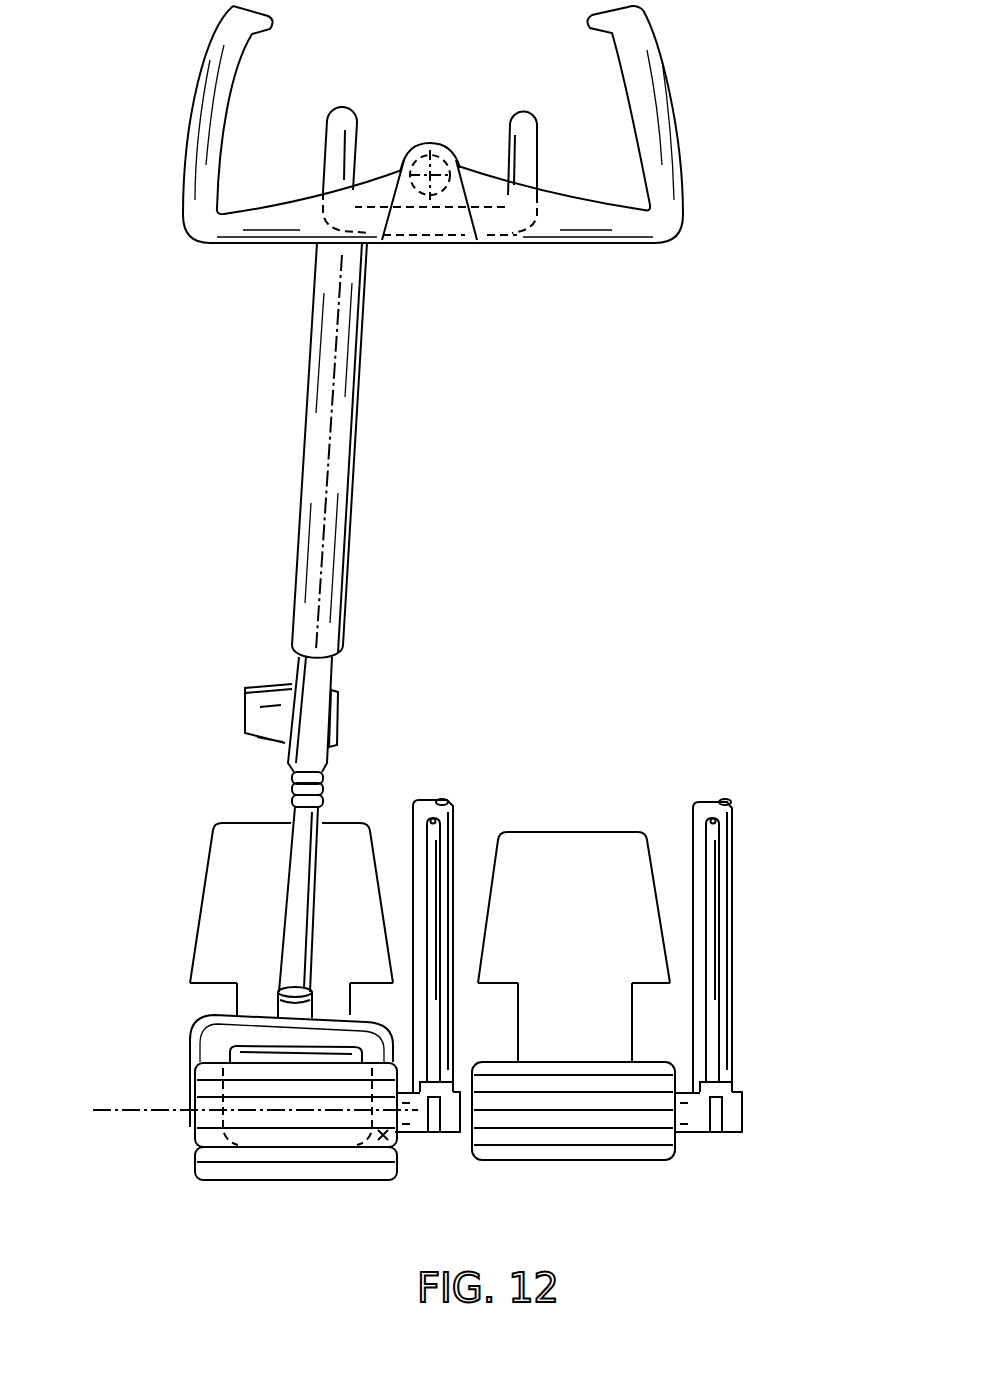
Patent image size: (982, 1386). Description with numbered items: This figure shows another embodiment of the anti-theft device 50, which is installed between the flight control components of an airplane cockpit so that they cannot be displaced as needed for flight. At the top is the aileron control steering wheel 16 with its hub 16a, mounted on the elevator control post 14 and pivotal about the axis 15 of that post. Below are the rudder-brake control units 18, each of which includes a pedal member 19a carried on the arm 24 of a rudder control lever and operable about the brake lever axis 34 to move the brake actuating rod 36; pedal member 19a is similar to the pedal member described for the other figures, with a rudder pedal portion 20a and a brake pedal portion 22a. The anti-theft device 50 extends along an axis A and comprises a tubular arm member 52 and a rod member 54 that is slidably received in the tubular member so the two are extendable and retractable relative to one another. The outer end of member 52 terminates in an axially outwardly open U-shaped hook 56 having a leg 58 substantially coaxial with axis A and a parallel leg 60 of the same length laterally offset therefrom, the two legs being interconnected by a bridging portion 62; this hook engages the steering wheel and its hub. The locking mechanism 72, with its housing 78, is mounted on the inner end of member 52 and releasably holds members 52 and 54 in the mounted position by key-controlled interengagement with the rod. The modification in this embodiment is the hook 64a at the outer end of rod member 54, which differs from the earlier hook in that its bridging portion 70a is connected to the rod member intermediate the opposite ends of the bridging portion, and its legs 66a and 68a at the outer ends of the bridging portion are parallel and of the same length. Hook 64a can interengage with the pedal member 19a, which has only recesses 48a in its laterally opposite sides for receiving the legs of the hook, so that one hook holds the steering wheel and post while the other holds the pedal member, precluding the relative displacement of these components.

The elevator control post 14 is at (415, 148).
The axis 15 is at (432, 174).
The aileron control steering wheel 16 is at (668, 72).
The hub 16a is at (452, 226).
The rudder-brake control unit 18 is at (219, 770).
The pedal member 19a is at (208, 822).
The roller 20a is at (316, 1160).
The leg body 22a is at (225, 868).
The arm 24 is at (448, 800).
The brake lever axis 34 is at (105, 1118).
The brake actuating rod 36 is at (434, 843).
The recesses 48a is at (233, 996).
The anti-theft device 50 is at (242, 498).
The arm member 52 is at (310, 356).
The rod member 54 is at (322, 812).
The U-shaped hook 56 is at (516, 120).
The leg 58 is at (333, 152).
The leg 60 is at (534, 166).
The bridging portion 62 is at (490, 236).
The modified hook 64a is at (192, 1040).
The leg 66a is at (398, 1146).
The leg 68a is at (196, 1095).
The bridging portion 70a is at (262, 1027).
The locking mechanism 72 is at (266, 689).
The housing 78 is at (320, 672).
The axis A is at (326, 546).